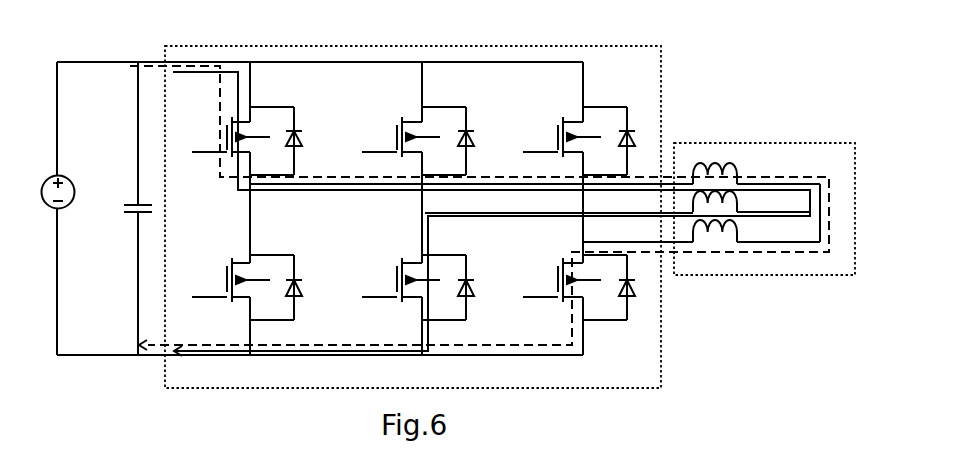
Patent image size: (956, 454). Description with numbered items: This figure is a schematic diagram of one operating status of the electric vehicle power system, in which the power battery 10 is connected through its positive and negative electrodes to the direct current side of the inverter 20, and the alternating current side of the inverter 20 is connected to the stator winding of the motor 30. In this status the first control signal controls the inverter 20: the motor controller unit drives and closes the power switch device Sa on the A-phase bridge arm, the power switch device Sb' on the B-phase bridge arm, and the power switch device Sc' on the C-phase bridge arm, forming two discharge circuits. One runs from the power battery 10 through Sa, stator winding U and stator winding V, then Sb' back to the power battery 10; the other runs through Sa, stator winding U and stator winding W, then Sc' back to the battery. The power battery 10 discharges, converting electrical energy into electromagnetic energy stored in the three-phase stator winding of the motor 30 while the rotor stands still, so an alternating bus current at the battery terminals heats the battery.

The power battery 10 is at (45, 193).
The inverter 20 is at (352, 46).
The motor 30 is at (718, 143).